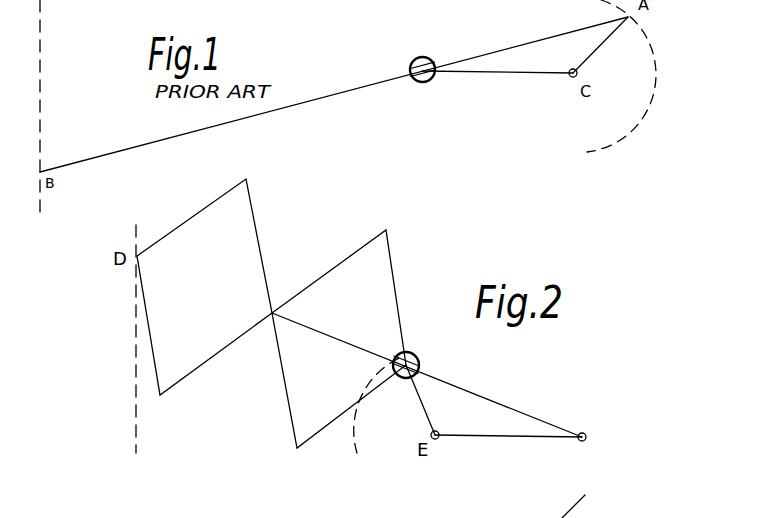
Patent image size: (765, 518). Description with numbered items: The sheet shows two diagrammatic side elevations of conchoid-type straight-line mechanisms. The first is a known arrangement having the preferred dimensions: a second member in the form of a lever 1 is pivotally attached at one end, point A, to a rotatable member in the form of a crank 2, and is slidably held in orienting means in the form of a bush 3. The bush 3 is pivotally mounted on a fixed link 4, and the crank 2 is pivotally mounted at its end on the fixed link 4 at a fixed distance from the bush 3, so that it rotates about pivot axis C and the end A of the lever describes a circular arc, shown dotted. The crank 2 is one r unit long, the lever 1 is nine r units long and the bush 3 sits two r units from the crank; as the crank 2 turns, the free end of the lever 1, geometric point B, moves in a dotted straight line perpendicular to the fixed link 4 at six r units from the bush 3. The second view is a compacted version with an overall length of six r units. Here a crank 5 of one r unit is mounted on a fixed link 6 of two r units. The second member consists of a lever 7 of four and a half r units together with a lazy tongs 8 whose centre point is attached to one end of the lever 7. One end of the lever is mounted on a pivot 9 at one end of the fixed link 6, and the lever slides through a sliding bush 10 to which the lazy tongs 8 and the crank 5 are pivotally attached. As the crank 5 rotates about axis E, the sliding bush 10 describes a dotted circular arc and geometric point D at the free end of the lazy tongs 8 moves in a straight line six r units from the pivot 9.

In FIG. 1, the lever 1 is at (522, 44).
In FIG. 1, the crank 2 is at (605, 43).
In FIG. 1, the bush 3 is at (423, 83).
In FIG. 1, the fixed link 4 is at (515, 75).
In FIG. 2, the crank 5 is at (417, 398).
In FIG. 2, the fixed link 6 is at (523, 438).
In FIG. 2, the lever 7 is at (488, 398).
In FIG. 2, the lazy tongs 8 is at (396, 292).
In FIG. 2, the pivot 9 is at (586, 431).
In FIG. 2, the sliding bush 10 is at (413, 351).